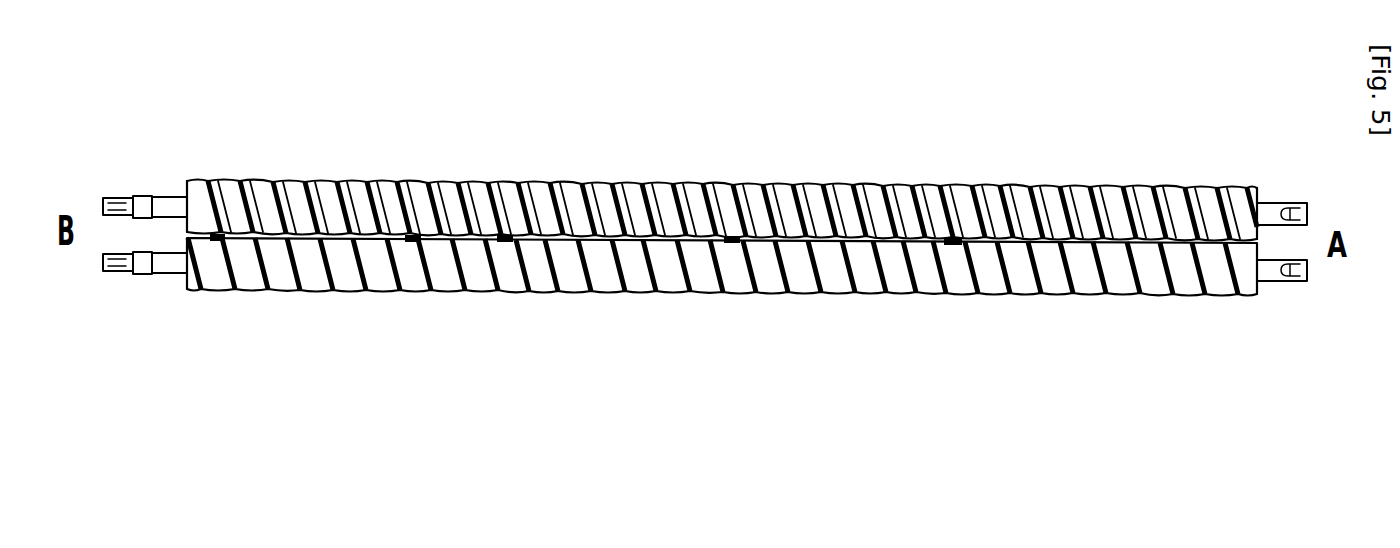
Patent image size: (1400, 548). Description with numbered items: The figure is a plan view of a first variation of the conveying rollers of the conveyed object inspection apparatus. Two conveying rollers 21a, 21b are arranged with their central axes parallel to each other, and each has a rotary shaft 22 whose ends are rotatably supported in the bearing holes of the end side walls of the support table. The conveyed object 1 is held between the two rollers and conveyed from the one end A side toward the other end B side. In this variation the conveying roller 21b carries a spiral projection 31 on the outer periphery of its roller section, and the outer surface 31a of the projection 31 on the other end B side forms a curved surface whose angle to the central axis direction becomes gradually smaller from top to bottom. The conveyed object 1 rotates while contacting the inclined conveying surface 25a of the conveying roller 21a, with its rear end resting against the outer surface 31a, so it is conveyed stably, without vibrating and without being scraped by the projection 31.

The conveyed object 1 is at (400, 235).
The conveying roller 21a is at (488, 182).
The conveying roller 21b is at (637, 293).
The rotary shaft 22 is at (165, 197).
The conveying surface 25a is at (748, 184).
The spiral projection 31 is at (462, 293).
The outer surface 31a is at (457, 292).